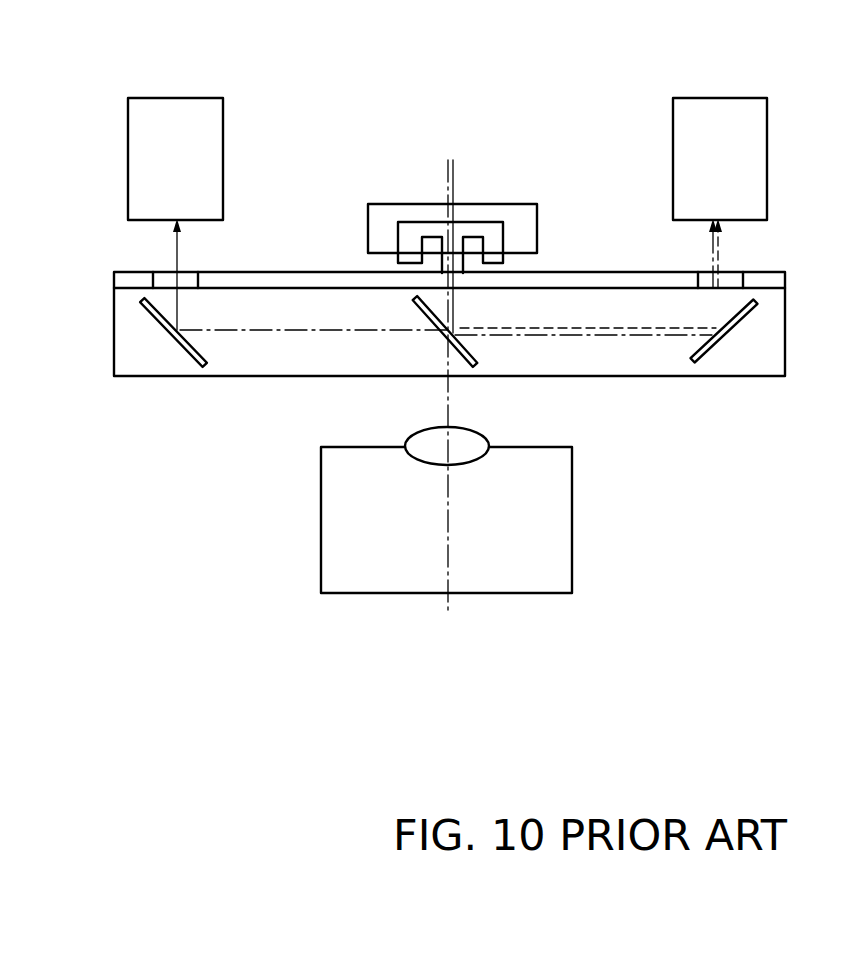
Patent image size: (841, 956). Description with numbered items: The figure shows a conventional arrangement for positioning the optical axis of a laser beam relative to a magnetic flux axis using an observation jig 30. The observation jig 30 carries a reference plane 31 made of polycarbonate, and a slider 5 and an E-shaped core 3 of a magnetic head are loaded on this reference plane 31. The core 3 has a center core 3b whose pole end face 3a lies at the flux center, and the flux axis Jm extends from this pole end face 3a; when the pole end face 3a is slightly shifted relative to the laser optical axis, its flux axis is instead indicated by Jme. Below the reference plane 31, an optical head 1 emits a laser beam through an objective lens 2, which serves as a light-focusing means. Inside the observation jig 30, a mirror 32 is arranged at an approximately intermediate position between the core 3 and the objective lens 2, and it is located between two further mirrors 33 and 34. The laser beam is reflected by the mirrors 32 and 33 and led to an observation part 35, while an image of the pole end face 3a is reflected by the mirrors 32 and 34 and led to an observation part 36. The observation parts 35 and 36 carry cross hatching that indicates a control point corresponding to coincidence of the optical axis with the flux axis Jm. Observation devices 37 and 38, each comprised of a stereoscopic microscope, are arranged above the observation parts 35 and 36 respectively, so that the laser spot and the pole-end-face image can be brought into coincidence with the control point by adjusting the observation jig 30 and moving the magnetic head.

The optical head 1 is at (560, 540).
The objective lens 2 is at (418, 438).
The core 3 is at (497, 240).
The pole end face 3a is at (458, 278).
The center core 3b is at (457, 238).
The slider 5 is at (372, 211).
The observation jig 30 is at (135, 368).
The reference plane 31 is at (265, 278).
The mirror 32 is at (463, 348).
The mirror 33 is at (193, 362).
The mirror 34 is at (708, 353).
The observation part 35 is at (163, 276).
The observation part 36 is at (733, 280).
The observation device 37 is at (185, 122).
The observation device 38 is at (732, 115).
The flux axis Jm is at (447, 177).
The flux axis (shifted) Jme is at (453, 177).